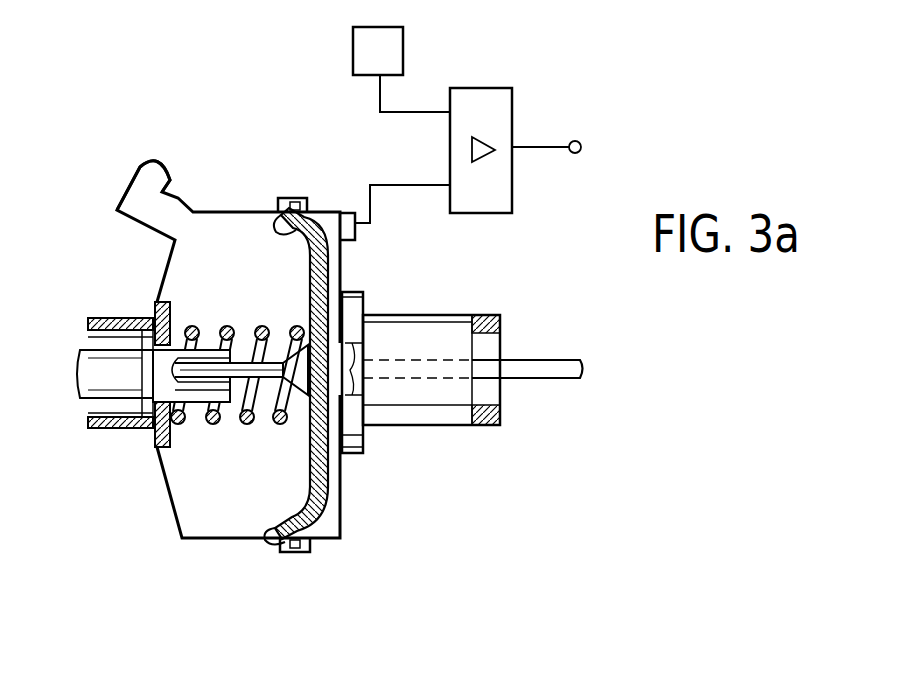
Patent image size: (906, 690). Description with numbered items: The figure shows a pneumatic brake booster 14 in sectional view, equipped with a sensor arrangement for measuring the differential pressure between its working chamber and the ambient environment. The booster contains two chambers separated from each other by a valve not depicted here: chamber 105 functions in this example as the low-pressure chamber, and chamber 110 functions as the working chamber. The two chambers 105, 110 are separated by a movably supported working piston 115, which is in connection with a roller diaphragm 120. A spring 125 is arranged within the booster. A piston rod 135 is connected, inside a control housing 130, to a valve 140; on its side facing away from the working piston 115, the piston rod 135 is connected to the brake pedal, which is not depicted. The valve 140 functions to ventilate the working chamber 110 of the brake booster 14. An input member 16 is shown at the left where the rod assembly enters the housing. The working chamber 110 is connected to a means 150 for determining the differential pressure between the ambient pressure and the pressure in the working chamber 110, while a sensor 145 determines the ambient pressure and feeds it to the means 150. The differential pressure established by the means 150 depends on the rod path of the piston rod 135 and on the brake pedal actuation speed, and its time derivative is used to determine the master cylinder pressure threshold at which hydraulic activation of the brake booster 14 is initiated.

The pneumatic brake booster 14 is at (182, 538).
The input sleeve 16 is at (107, 430).
The low-pressure chamber 105 is at (209, 226).
The working chamber 110 is at (318, 223).
The working piston 115 is at (309, 283).
The roller diaphragm 120 is at (262, 513).
The spring 125 is at (212, 420).
The control housing 130 is at (443, 412).
The piston rod 135 is at (557, 367).
The valve 140 is at (350, 453).
The sensor 145 is at (353, 52).
The means for determining a differential pressure 150 is at (490, 100).